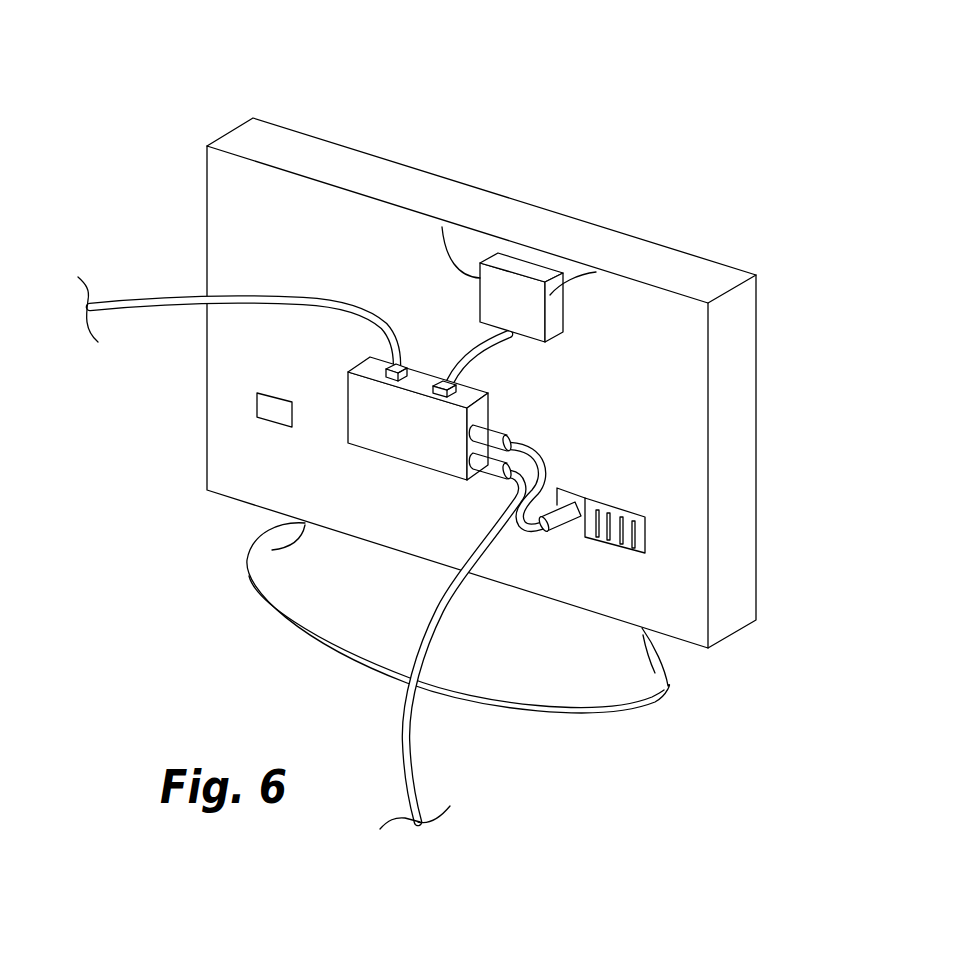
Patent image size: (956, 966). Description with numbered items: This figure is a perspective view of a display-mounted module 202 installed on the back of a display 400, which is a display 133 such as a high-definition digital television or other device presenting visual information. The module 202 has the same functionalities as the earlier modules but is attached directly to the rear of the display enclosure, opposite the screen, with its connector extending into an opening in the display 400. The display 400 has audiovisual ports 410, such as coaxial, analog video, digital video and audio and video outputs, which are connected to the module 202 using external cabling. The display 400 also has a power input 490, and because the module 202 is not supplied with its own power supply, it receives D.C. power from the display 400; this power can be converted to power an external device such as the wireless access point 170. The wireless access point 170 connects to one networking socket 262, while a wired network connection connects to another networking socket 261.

The display 133 is at (221, 103).
The display 400 is at (242, 268).
The wireless access point 170 is at (527, 318).
The display-mounted module 202 is at (435, 453).
The networking socket 261 is at (402, 362).
The networking socket 262 is at (441, 380).
The power input 490 is at (275, 405).
The audiovisual ports 410 is at (613, 540).